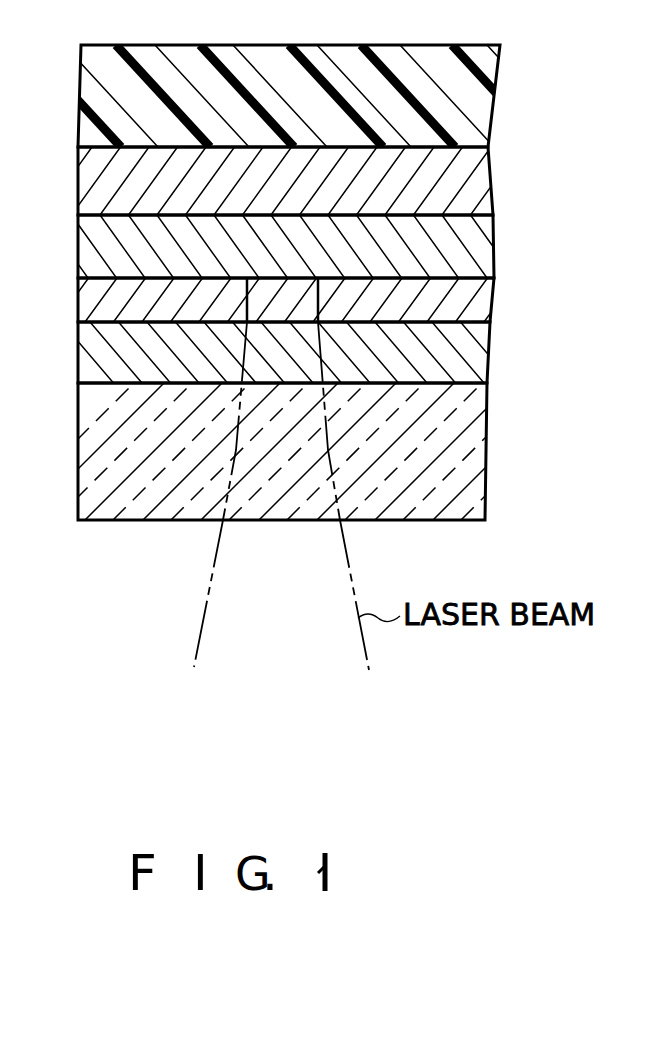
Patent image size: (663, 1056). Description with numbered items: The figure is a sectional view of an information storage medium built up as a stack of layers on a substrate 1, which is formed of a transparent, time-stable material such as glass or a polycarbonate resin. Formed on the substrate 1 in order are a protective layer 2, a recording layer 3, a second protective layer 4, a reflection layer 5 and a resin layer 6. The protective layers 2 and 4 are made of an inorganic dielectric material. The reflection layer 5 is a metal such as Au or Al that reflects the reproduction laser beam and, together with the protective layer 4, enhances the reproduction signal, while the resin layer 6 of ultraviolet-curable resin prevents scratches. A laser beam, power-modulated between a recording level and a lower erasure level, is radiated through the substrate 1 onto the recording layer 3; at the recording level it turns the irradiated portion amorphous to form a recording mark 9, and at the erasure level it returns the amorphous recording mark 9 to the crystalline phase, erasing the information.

The substrate 1 is at (484, 437).
The protective layer 2 is at (488, 360).
The recording layer 3 is at (493, 300).
The protective layer 4 is at (494, 253).
The reflection layer 5 is at (492, 193).
The resin layer 6 is at (492, 105).
The recording mark 9 is at (263, 297).